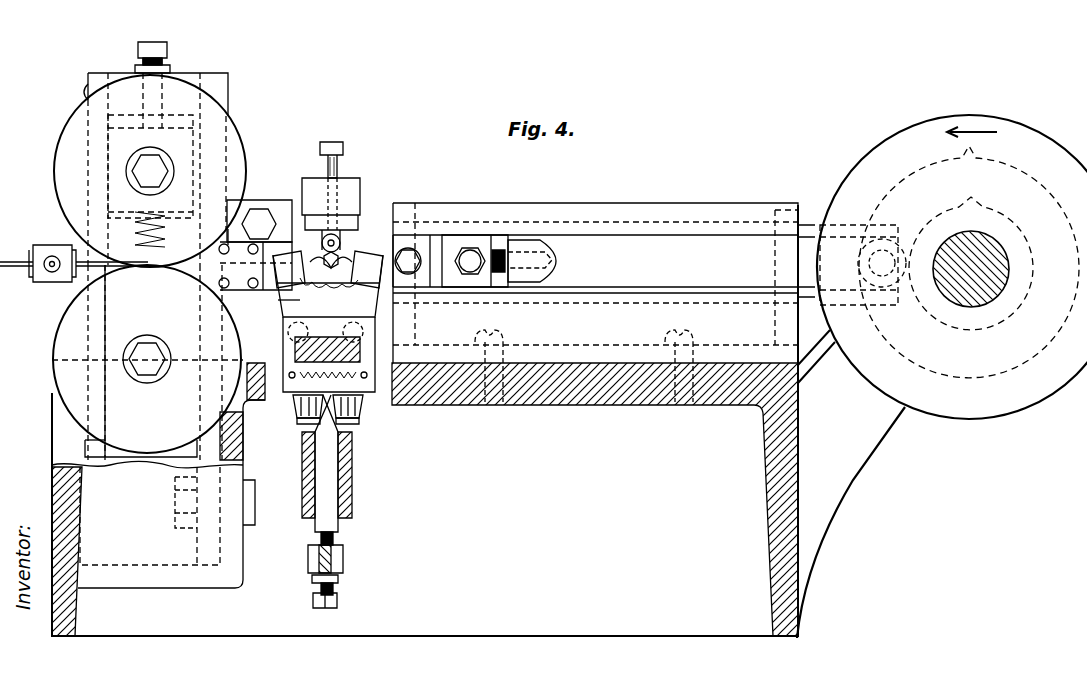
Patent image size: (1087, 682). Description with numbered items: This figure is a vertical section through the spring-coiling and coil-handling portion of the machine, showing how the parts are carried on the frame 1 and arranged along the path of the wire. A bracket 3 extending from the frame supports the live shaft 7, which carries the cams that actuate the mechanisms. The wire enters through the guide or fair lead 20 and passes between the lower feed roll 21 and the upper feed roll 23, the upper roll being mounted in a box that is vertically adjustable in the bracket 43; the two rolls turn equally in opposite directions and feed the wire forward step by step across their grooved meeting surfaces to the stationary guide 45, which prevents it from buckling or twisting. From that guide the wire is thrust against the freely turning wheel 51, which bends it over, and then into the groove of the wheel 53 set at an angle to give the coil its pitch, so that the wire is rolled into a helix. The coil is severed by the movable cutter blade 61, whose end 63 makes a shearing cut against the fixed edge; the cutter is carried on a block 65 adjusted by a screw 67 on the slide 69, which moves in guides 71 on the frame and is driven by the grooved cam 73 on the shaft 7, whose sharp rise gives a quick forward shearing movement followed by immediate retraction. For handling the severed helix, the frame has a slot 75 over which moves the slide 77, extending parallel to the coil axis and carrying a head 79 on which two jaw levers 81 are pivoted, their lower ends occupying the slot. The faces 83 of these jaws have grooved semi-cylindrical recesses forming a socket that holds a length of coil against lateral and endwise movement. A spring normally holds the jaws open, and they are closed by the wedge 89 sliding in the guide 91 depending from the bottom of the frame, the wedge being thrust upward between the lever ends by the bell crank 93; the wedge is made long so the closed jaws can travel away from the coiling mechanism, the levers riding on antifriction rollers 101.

The frame 1 is at (765, 440).
The bracket 3 is at (858, 462).
The live shaft 7 is at (1010, 263).
The guide or fair lead 20 is at (40, 244).
The lower feed roll 21 is at (66, 314).
The upper feed roll 23 is at (55, 172).
The bracket 43 is at (232, 90).
The stationary guide 45 is at (275, 293).
The wheel 51 is at (290, 304).
The wheel 53 is at (308, 185).
The movable cutter blade 61 is at (358, 244).
The cutter end 63 is at (328, 286).
The block 65 is at (452, 242).
The screw 67 is at (498, 248).
The slide 69 is at (600, 238).
The guides 71 is at (722, 224).
The grooved cam 73 is at (972, 328).
The slot 75 is at (378, 396).
The slide 77 is at (297, 350).
The head 79 is at (291, 405).
The jaw levers 81 is at (306, 424).
The gripping faces 83 is at (290, 260).
The wedge 89 is at (330, 505).
The guide 91 is at (352, 486).
The bell crank 93 is at (345, 560).
The antifriction rollers 101 is at (350, 410).